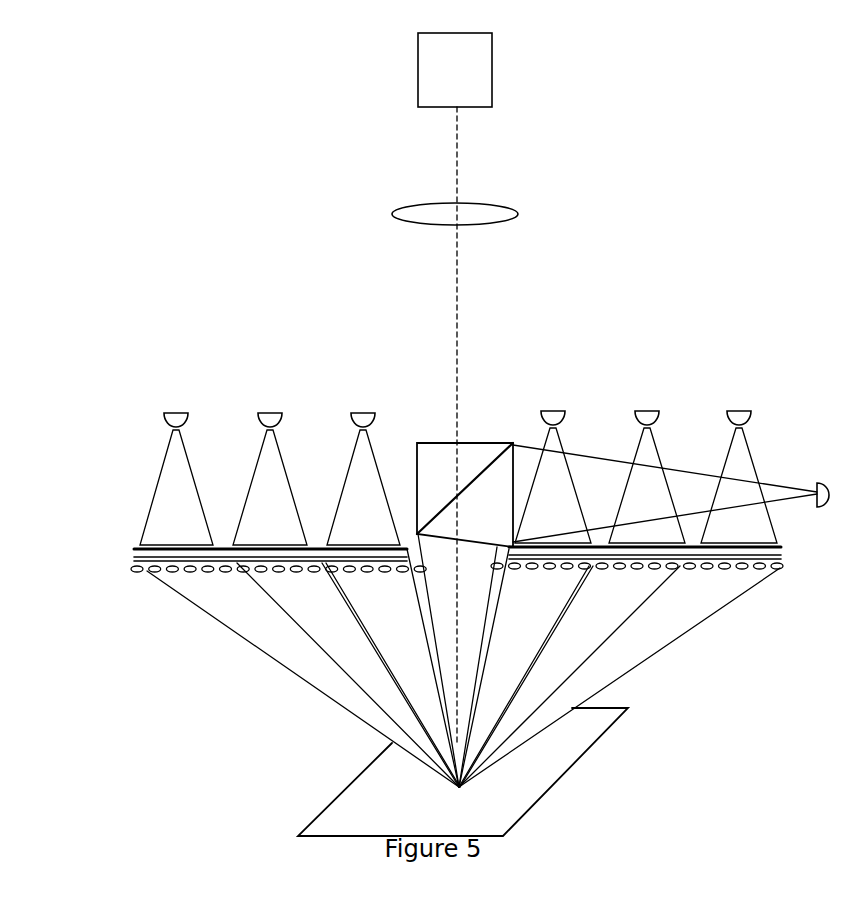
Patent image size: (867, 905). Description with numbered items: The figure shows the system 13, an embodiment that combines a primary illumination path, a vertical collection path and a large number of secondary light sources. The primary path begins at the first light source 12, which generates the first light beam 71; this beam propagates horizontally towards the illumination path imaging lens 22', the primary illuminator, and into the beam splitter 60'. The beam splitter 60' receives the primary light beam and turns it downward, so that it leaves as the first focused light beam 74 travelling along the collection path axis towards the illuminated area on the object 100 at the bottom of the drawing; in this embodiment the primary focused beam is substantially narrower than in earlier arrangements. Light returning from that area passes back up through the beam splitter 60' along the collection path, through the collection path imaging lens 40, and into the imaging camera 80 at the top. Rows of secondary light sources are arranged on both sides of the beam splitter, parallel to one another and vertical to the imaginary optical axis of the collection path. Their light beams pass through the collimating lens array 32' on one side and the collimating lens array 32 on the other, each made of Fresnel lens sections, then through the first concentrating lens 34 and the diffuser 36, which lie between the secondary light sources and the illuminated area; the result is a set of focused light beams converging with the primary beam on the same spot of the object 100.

The imaging camera 80 is at (455, 70).
The collection path imaging lens 40 is at (455, 216).
The beam splitter 60' is at (458, 481).
The illumination path imaging lens 22' is at (465, 475).
The first light beam 71 is at (665, 493).
The first light source 12 is at (836, 494).
The collimating lens array 32' is at (251, 533).
The collimating lens array 32 is at (664, 538).
The first concentrating lens 34 is at (140, 562).
The diffuser 36 is at (134, 570).
The first focused light beam 74 is at (457, 660).
The sample / object 100 is at (420, 817).
The system 13 is at (159, 808).